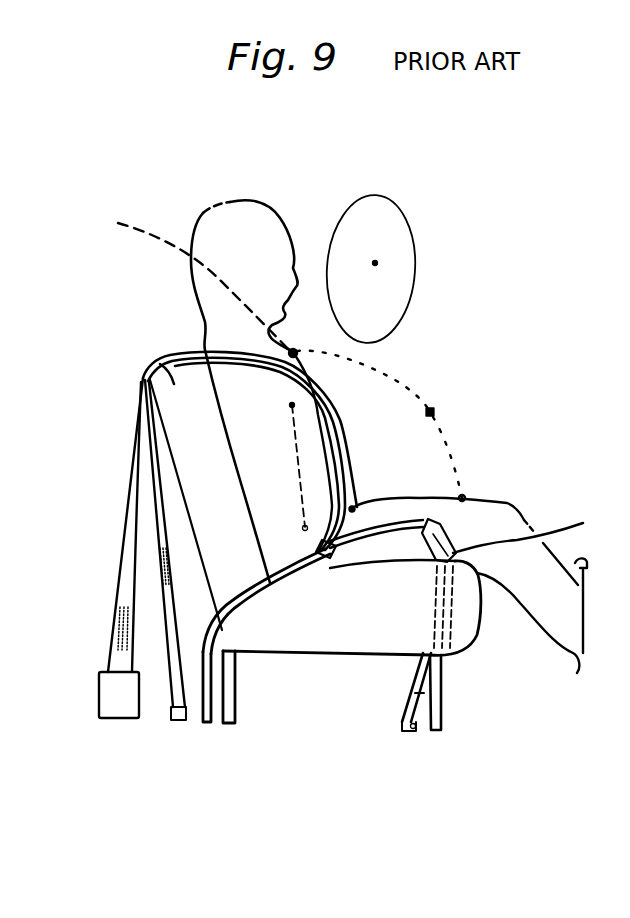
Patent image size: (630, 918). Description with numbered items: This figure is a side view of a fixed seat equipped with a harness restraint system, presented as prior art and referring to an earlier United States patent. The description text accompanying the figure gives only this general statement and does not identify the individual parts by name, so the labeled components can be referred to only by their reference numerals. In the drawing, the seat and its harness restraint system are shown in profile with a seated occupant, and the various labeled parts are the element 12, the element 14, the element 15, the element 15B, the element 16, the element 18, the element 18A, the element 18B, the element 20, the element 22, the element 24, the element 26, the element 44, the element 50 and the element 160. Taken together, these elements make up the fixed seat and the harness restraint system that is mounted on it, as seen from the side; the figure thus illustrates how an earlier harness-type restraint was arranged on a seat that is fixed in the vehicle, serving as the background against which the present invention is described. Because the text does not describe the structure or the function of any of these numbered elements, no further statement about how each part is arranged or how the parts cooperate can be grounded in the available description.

The shoulder belt webbing 12 is at (127, 558).
The lap belt webbing 14 is at (157, 532).
The vehicle seat 15 is at (323, 670).
The seat cushion 15B is at (398, 767).
The seat back 16 is at (142, 371).
The seat belt webbing 18 is at (120, 231).
The belt webbing first position 18A is at (292, 405).
The belt webbing second position 18B is at (433, 412).
The retractor 20 is at (112, 697).
The anchor 22 is at (177, 720).
The seat slide rail 24 is at (415, 693).
The occupant leg 26 is at (583, 524).
The buckle 44 is at (313, 547).
The lap belt anchor 50 is at (445, 650).
The airbag 160 is at (377, 261).